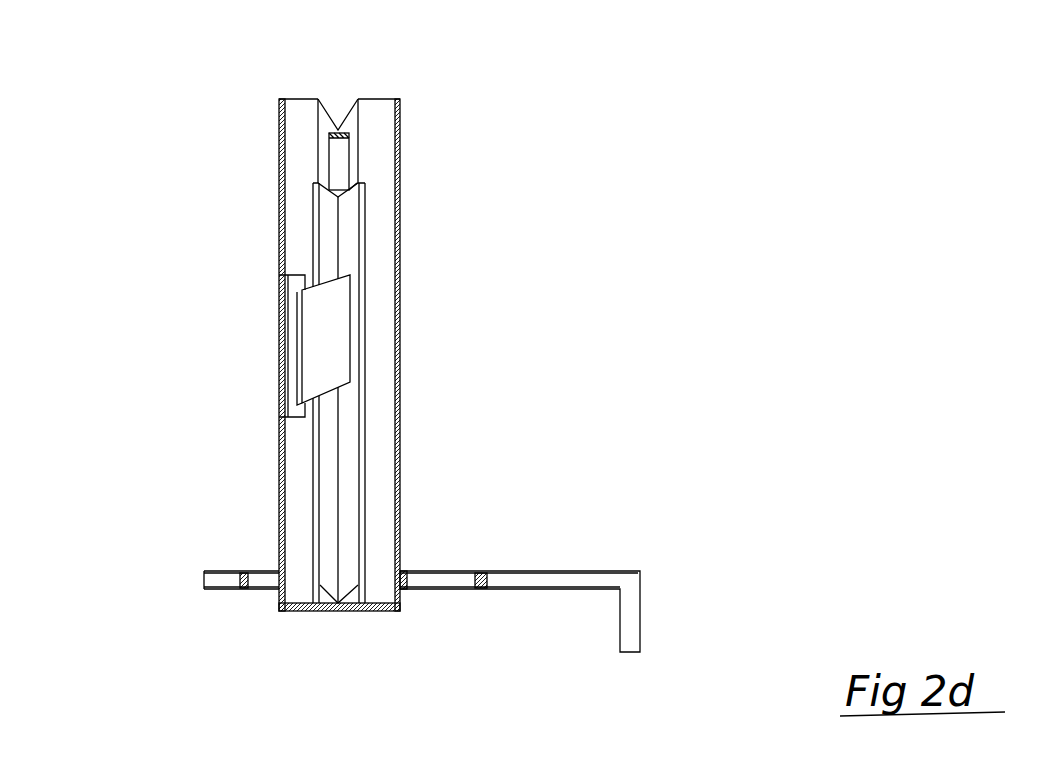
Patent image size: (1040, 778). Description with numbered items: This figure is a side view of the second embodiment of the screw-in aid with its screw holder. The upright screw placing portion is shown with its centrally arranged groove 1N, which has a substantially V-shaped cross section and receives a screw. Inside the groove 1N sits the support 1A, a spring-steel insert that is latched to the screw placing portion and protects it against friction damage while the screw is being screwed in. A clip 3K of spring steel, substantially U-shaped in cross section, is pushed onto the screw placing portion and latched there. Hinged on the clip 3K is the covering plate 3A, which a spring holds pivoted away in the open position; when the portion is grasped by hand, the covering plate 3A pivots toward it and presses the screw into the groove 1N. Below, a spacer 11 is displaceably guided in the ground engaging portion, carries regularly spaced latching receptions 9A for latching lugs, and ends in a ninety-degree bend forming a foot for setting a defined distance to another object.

The groove 1N is at (337, 92).
The support 1A is at (333, 586).
The covering plate 3A is at (323, 340).
The clip 3K is at (282, 402).
The spacer 11 is at (537, 553).
The latching reception 9A is at (487, 580).